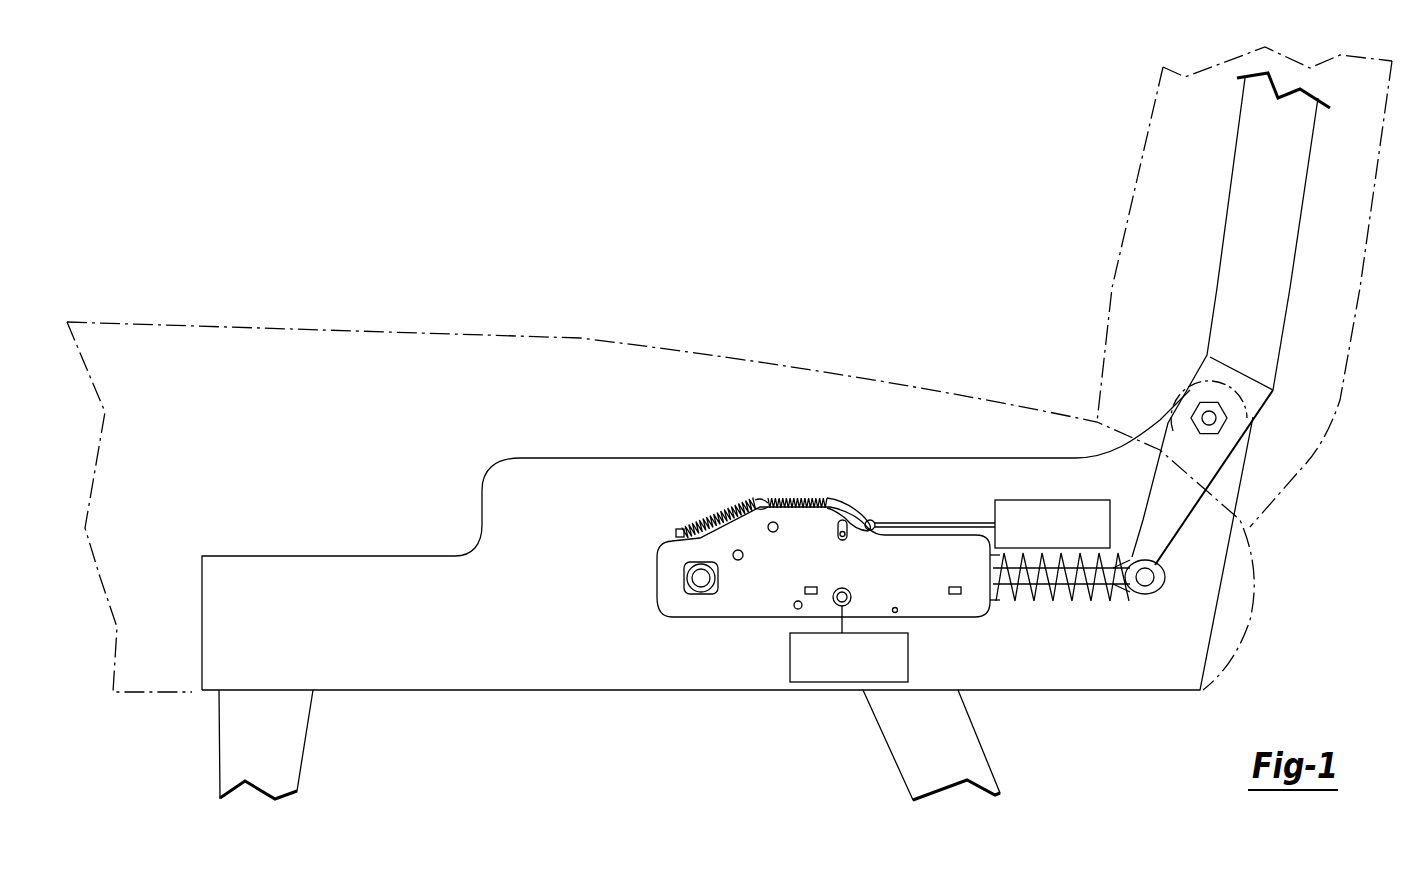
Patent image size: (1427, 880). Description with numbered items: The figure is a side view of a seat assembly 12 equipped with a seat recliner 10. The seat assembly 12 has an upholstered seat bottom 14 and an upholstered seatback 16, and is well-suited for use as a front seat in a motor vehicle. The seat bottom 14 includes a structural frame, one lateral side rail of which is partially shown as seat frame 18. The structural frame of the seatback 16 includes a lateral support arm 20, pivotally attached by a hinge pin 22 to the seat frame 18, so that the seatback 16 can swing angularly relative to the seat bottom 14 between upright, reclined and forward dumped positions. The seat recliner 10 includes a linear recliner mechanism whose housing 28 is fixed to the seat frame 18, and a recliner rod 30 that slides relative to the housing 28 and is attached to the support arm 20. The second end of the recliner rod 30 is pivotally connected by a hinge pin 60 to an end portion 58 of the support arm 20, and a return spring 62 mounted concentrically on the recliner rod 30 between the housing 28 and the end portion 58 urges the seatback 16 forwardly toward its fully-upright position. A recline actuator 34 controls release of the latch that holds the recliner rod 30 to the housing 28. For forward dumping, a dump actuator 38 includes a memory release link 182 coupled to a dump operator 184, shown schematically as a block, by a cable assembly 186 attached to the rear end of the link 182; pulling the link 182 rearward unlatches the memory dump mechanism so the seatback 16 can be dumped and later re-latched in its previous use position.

The seat recliner 10 is at (919, 503).
The seat assembly 12 is at (817, 260).
The seat bottom 14 is at (603, 373).
The seatback 16 is at (1157, 162).
The seat frame 18 is at (537, 472).
The support arm 20 is at (1263, 242).
The hinge pin 22 is at (1210, 418).
The housing 28 is at (673, 597).
The recliner rod 30 is at (1073, 600).
The recline actuator 34 is at (798, 648).
The dump actuator 38 is at (958, 496).
The end portion of support arm 58 is at (1167, 537).
The hinge pin 60 is at (1155, 596).
The return spring 62 is at (1025, 607).
The memory release link 182 is at (870, 517).
The dump operator 184 is at (1113, 482).
The cable assembly 186 is at (900, 523).